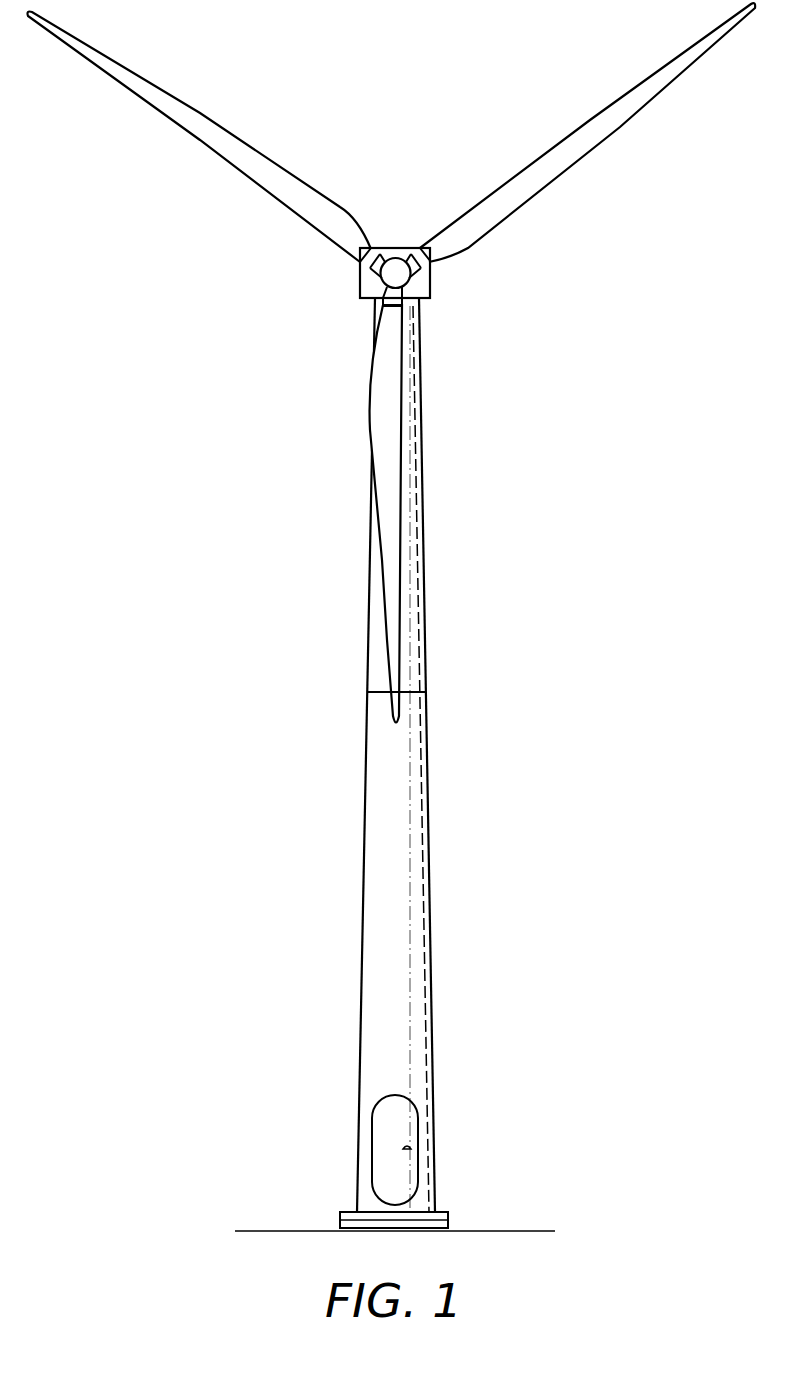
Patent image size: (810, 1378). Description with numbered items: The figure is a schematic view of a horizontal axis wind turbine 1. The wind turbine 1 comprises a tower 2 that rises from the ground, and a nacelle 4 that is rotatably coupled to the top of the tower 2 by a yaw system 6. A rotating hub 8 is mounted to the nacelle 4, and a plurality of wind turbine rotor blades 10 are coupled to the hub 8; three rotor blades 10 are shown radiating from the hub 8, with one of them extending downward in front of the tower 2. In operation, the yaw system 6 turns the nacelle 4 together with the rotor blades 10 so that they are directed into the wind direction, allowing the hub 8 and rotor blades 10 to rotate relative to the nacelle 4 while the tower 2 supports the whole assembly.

The wind turbine 1 is at (124, 397).
The tower 2 is at (428, 882).
The nacelle 4 is at (392, 248).
The yaw system 6 is at (426, 300).
The rotating hub 8 is at (400, 275).
The wind turbine rotor blades 10 is at (249, 155).